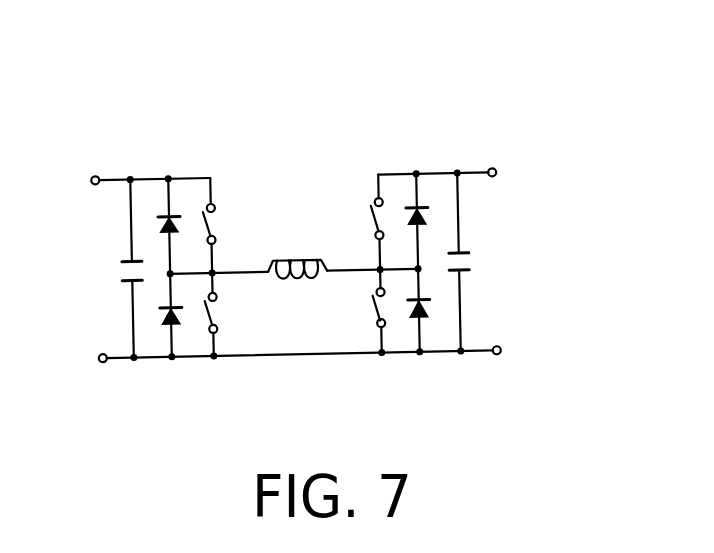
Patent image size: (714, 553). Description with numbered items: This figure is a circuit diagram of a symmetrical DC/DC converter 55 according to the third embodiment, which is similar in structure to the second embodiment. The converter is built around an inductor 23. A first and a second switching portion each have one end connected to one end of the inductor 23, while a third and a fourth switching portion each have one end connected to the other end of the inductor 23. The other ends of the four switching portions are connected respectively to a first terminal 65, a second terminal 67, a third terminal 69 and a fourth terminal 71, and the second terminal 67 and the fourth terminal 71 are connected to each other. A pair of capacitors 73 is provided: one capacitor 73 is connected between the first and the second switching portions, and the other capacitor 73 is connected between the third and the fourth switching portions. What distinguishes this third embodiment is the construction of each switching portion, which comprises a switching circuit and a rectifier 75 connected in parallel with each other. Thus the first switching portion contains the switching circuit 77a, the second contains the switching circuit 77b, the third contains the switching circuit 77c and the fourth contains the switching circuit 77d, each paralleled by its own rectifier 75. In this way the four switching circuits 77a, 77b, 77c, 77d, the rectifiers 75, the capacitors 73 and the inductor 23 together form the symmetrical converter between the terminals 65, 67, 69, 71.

The symmetrical DC/DC converter 55 is at (299, 112).
The inductor 23 is at (292, 285).
The first terminal 65 is at (97, 177).
The second terminal 67 is at (102, 364).
The third terminal 69 is at (496, 172).
The fourth terminal 71 is at (501, 350).
The capacitor 73 is at (120, 274).
The rectifier 75 is at (164, 212).
The switching circuit 77a is at (223, 220).
The switching circuit 77b is at (223, 318).
The switching circuit 77c is at (375, 197).
The switching circuit 77d is at (378, 327).